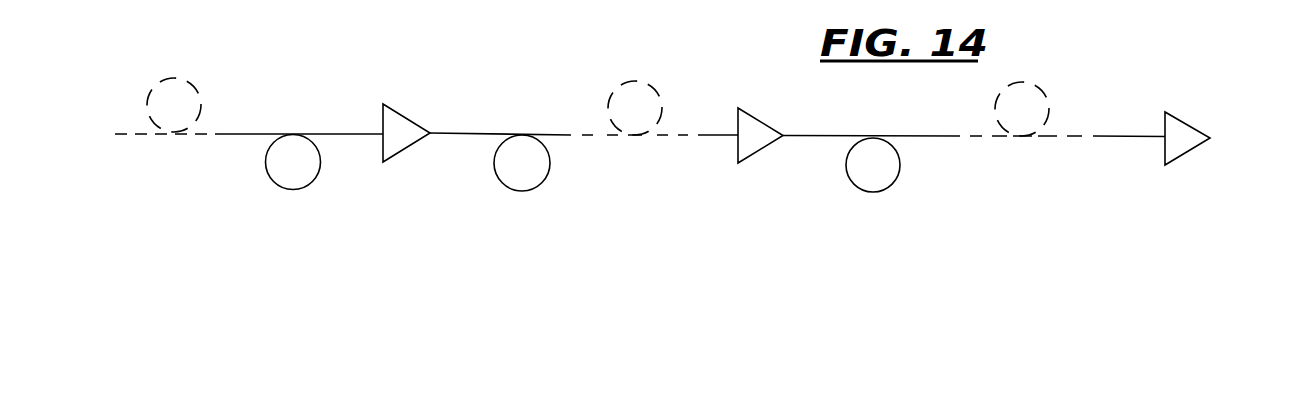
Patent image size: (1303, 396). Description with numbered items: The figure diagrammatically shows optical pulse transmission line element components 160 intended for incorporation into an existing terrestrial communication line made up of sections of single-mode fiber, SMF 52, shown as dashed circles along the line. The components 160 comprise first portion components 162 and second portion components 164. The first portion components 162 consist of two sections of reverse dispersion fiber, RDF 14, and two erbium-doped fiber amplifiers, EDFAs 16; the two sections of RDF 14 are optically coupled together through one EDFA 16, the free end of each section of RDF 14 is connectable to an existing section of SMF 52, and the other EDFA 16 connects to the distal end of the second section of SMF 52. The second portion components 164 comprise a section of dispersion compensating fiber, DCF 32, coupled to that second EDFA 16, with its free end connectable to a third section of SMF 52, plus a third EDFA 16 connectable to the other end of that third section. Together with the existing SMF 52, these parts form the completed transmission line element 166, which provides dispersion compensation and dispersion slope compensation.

The RDF 14 is at (302, 172).
The EDFA 16 is at (402, 130).
The DCF 32 is at (878, 168).
The SMF 52 is at (183, 111).
The transmission line element components 160 is at (762, 273).
The first portion components 162 is at (412, 204).
The second portion components 164 is at (1053, 210).
The transmission line element 166 is at (643, 293).